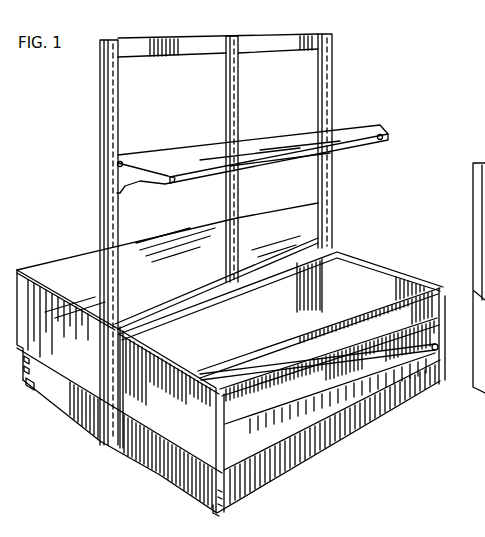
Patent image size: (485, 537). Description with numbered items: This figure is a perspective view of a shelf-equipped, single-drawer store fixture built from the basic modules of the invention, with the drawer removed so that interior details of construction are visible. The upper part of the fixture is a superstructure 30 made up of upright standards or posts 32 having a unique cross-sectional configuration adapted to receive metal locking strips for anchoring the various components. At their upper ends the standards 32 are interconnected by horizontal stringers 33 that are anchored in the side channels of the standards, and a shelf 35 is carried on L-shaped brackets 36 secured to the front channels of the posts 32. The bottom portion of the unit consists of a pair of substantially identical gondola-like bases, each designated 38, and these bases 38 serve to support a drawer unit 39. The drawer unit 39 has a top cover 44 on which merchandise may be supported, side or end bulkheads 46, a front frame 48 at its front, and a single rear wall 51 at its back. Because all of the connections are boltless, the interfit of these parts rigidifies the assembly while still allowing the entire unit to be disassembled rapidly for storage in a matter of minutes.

The superstructure 30 is at (220, 227).
The standards 32 is at (117, 100).
The horizontal stringers 33 is at (176, 42).
The shelf 35 is at (350, 124).
The L-shaped brackets 36 is at (115, 174).
The base 38 is at (58, 412).
The drawer unit 39 is at (232, 359).
The cover 44 is at (166, 271).
The side or end bulkheads 46 is at (54, 342).
The front frame 48 is at (421, 288).
The rear wall 51 is at (250, 327).